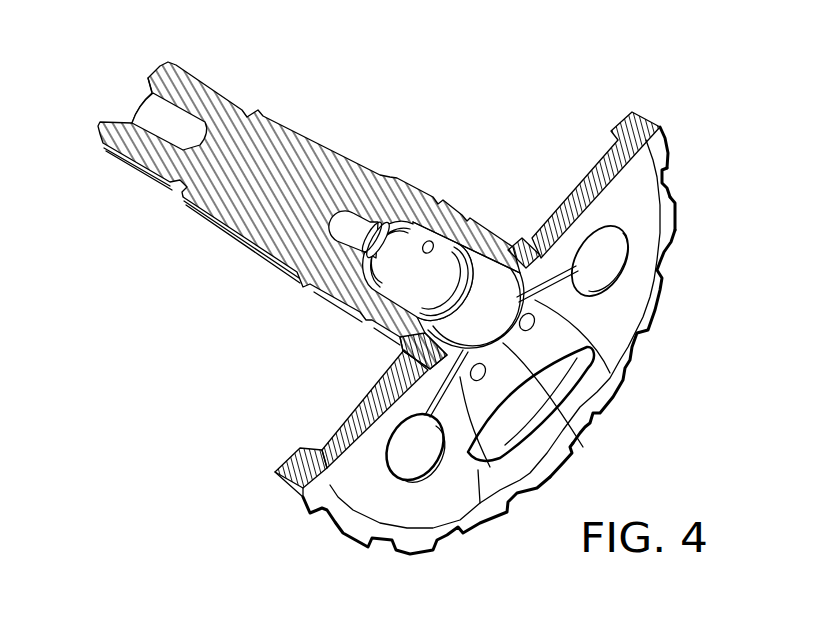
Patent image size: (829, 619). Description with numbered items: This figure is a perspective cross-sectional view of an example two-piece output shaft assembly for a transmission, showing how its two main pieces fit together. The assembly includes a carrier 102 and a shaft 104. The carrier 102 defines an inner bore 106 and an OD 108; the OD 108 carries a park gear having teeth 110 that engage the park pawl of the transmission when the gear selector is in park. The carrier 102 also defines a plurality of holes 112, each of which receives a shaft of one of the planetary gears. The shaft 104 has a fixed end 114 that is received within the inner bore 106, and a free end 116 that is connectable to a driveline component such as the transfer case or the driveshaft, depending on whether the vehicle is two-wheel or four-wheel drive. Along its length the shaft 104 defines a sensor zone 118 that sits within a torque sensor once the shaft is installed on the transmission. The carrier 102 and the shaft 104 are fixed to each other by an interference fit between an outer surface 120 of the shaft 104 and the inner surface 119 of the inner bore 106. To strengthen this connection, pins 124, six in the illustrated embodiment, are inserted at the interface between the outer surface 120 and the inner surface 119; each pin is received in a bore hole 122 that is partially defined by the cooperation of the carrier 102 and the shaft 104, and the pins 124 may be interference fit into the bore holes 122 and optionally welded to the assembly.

The carrier 102 is at (607, 168).
The shaft 104 is at (420, 183).
The inner bore 106 is at (490, 455).
The OD 108 is at (668, 178).
The teeth 110 is at (677, 213).
The holes 112 is at (607, 263).
The fixed end 114 is at (578, 430).
The free end 116 is at (150, 67).
The sensor zone 118 is at (313, 137).
The inner surface 119 is at (418, 361).
The outer surface 120 is at (627, 359).
The bore holes 122 is at (523, 236).
The pins 124 is at (407, 353).